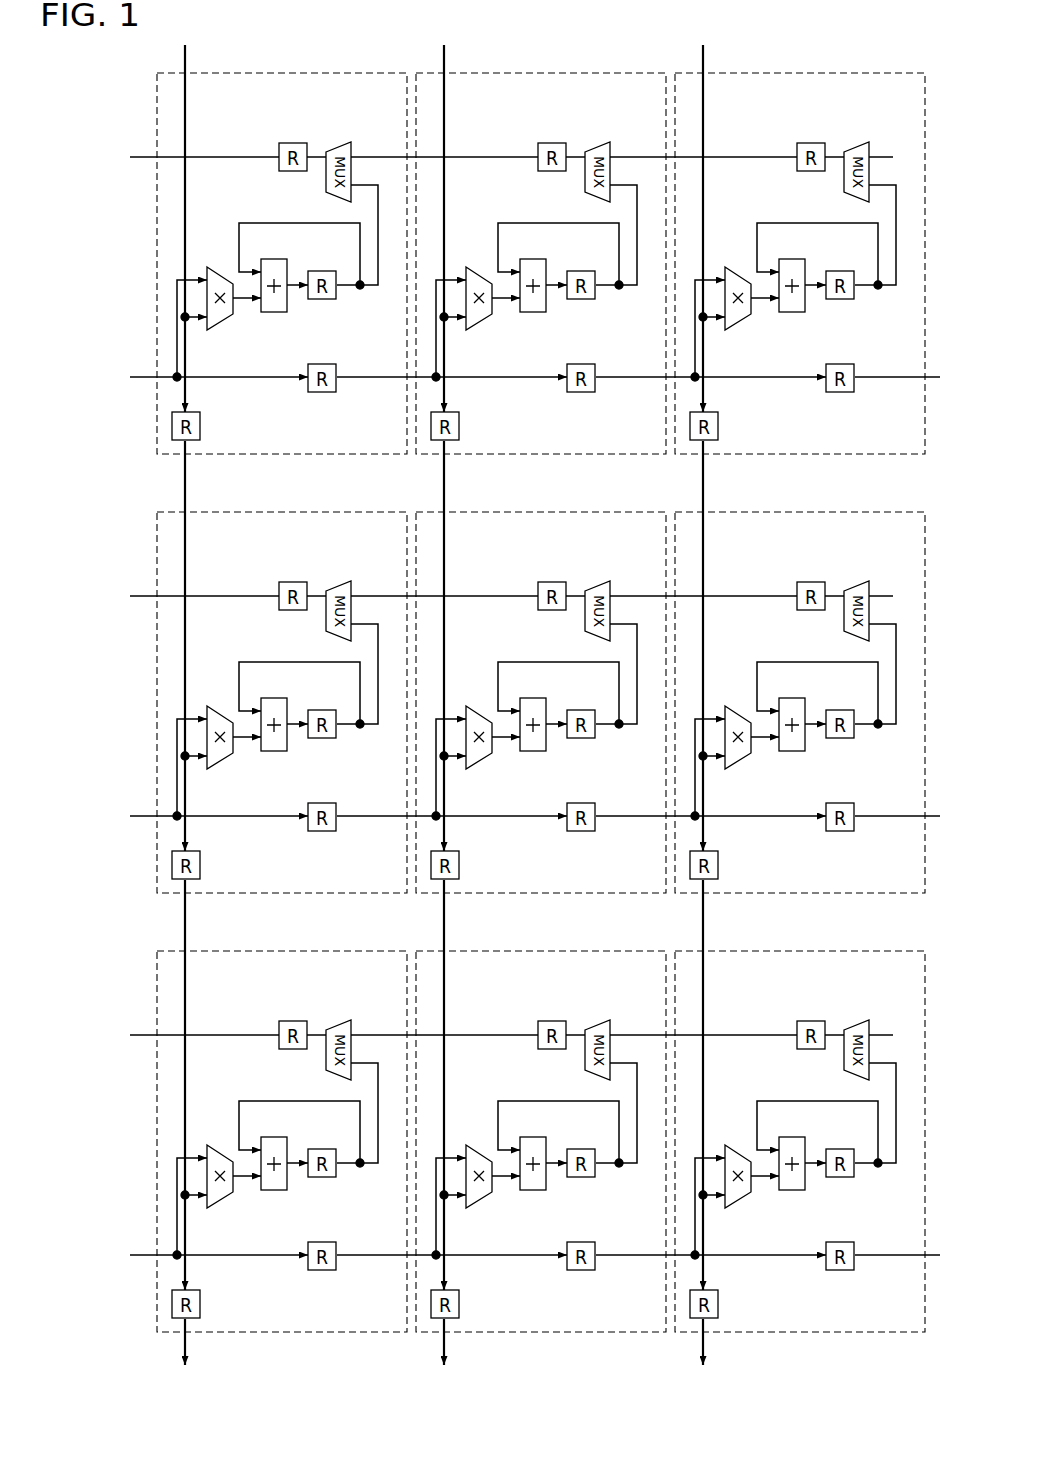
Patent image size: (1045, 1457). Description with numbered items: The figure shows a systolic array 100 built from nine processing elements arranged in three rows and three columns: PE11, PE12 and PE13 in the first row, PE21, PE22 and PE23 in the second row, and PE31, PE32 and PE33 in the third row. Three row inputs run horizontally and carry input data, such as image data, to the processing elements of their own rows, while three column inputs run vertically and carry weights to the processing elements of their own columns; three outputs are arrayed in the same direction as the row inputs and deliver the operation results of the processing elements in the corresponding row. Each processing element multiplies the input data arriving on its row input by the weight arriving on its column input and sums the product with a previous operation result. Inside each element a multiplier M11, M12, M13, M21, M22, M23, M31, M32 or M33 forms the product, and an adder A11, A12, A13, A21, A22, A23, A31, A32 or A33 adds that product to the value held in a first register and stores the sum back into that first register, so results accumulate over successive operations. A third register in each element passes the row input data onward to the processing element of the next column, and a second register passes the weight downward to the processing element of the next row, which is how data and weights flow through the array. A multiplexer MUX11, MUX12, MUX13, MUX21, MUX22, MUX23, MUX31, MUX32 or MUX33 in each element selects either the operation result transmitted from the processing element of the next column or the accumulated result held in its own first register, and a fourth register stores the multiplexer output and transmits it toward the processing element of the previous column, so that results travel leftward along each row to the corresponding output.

The systolic array 100 is at (910, 18).
The processing element PE11 is at (345, 73).
The processing element PE12 is at (541, 251).
The processing element PE13 is at (800, 251).
The processing element PE21 is at (282, 690).
The processing element PE22 is at (541, 690).
The processing element PE23 is at (800, 690).
The processing element PE31 is at (282, 1129).
The processing element PE32 is at (541, 1129).
The processing element PE33 is at (800, 1129).
The multiplier M11 is at (212, 267).
The multiplier M12 is at (475, 271).
The multiplier M13 is at (734, 271).
The multiplier M21 is at (216, 710).
The multiplier M22 is at (475, 710).
The multiplier M23 is at (734, 710).
The multiplier M31 is at (216, 1149).
The multiplier M32 is at (475, 1149).
The multiplier M33 is at (734, 1149).
The adder A11 is at (274, 259).
The adder A12 is at (532, 269).
The adder A13 is at (791, 269).
The adder A21 is at (273, 708).
The adder A22 is at (532, 708).
The adder A23 is at (791, 708).
The adder A31 is at (273, 1147).
The adder A32 is at (532, 1147).
The adder A33 is at (791, 1147).
The multiplexer MUX11 is at (350, 146).
The multiplexer MUX12 is at (619, 143).
The multiplexer MUX13 is at (878, 143).
The multiplexer MUX21 is at (360, 582).
The multiplexer MUX22 is at (619, 582).
The multiplexer MUX23 is at (878, 582).
The multiplexer MUX31 is at (360, 1021).
The multiplexer MUX32 is at (619, 1021).
The multiplexer MUX33 is at (878, 1021).